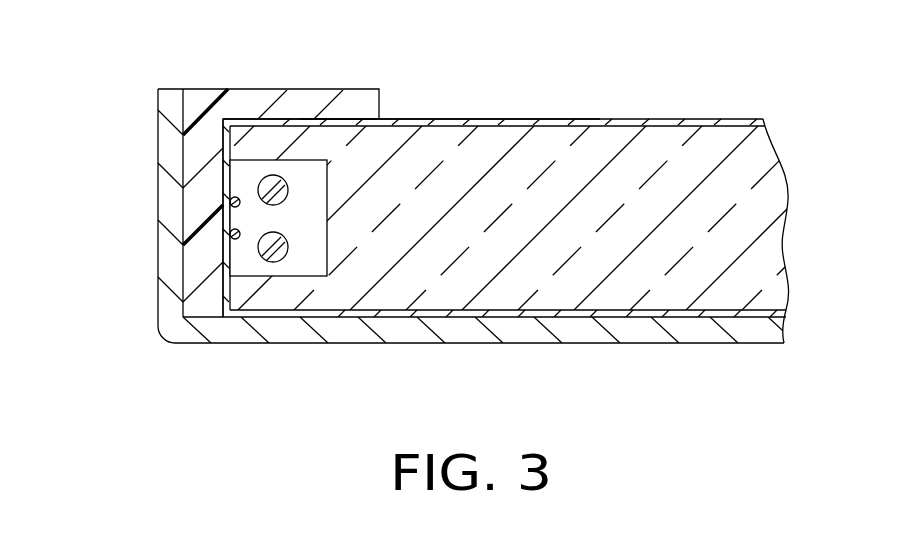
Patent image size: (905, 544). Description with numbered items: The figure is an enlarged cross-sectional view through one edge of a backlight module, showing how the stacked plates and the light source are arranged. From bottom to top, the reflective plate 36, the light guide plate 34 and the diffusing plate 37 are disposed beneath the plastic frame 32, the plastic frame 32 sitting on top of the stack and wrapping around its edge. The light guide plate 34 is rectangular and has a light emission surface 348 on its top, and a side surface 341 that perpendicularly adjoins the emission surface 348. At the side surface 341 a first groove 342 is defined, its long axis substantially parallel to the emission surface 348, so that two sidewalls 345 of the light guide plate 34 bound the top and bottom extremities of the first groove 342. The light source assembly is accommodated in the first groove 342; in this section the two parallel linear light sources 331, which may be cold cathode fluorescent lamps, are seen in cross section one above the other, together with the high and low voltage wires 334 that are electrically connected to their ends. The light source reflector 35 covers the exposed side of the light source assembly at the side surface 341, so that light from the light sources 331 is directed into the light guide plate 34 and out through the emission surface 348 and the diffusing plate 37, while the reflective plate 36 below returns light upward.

The plastic frame 32 is at (305, 102).
The light guide plate 34 is at (610, 137).
The light source reflector 35 is at (223, 118).
The reflective plate 36 is at (473, 314).
The diffusing plate 37 is at (512, 122).
The linear light sources 331 is at (272, 247).
The high and low voltage wires 334 is at (229, 200).
The side surface 341 is at (223, 146).
The first groove 342 is at (299, 233).
The sidewalls 345 is at (267, 138).
The light emission surface 348 is at (442, 120).